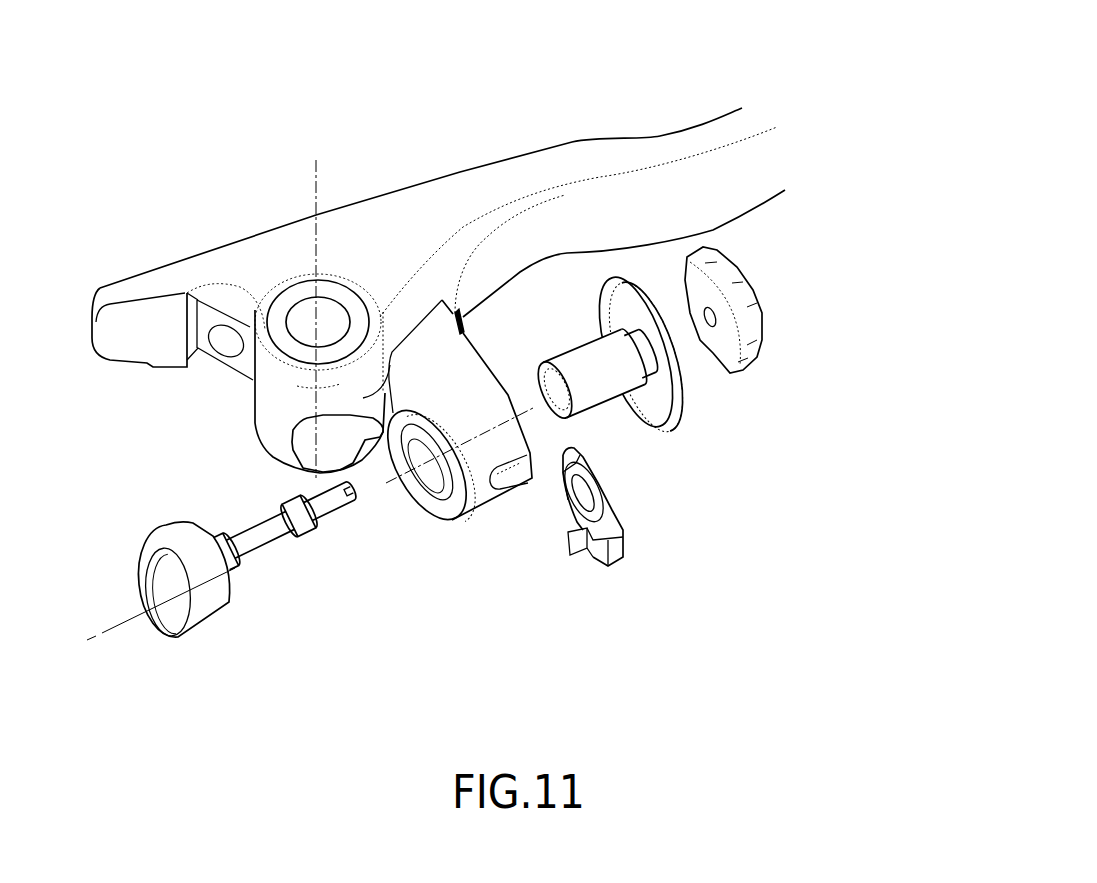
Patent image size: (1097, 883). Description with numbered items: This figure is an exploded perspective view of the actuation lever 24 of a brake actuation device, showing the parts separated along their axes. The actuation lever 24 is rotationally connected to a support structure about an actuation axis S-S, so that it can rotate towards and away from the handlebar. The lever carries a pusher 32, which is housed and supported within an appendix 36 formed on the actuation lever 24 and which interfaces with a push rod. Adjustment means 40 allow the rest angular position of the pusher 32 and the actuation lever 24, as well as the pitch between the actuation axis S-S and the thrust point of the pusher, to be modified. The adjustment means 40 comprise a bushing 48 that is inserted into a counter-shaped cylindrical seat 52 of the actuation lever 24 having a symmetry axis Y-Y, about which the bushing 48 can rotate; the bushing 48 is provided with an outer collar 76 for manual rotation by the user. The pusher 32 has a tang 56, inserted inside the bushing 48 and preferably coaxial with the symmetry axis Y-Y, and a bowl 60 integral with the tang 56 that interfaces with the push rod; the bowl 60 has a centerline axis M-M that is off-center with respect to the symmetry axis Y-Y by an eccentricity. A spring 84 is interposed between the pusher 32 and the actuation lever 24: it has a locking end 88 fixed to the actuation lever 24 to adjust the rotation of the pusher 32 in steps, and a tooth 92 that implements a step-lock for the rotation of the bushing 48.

The actuation lever 24 is at (603, 167).
The pusher 32 is at (260, 564).
The appendix 36 is at (449, 491).
The adjustment means 40 is at (445, 505).
The bushing 48 is at (593, 396).
The cylindrical seat 52 is at (433, 477).
The tang 56 is at (268, 556).
The bowl 60 is at (197, 620).
The outer collar 76 is at (606, 282).
The spring 84 is at (620, 566).
The locking end 88 is at (570, 567).
The tooth 92 is at (563, 472).
The actuation axis S is at (314, 170).
The symmetry axis Y is at (519, 379).
The centerline axis M is at (88, 638).